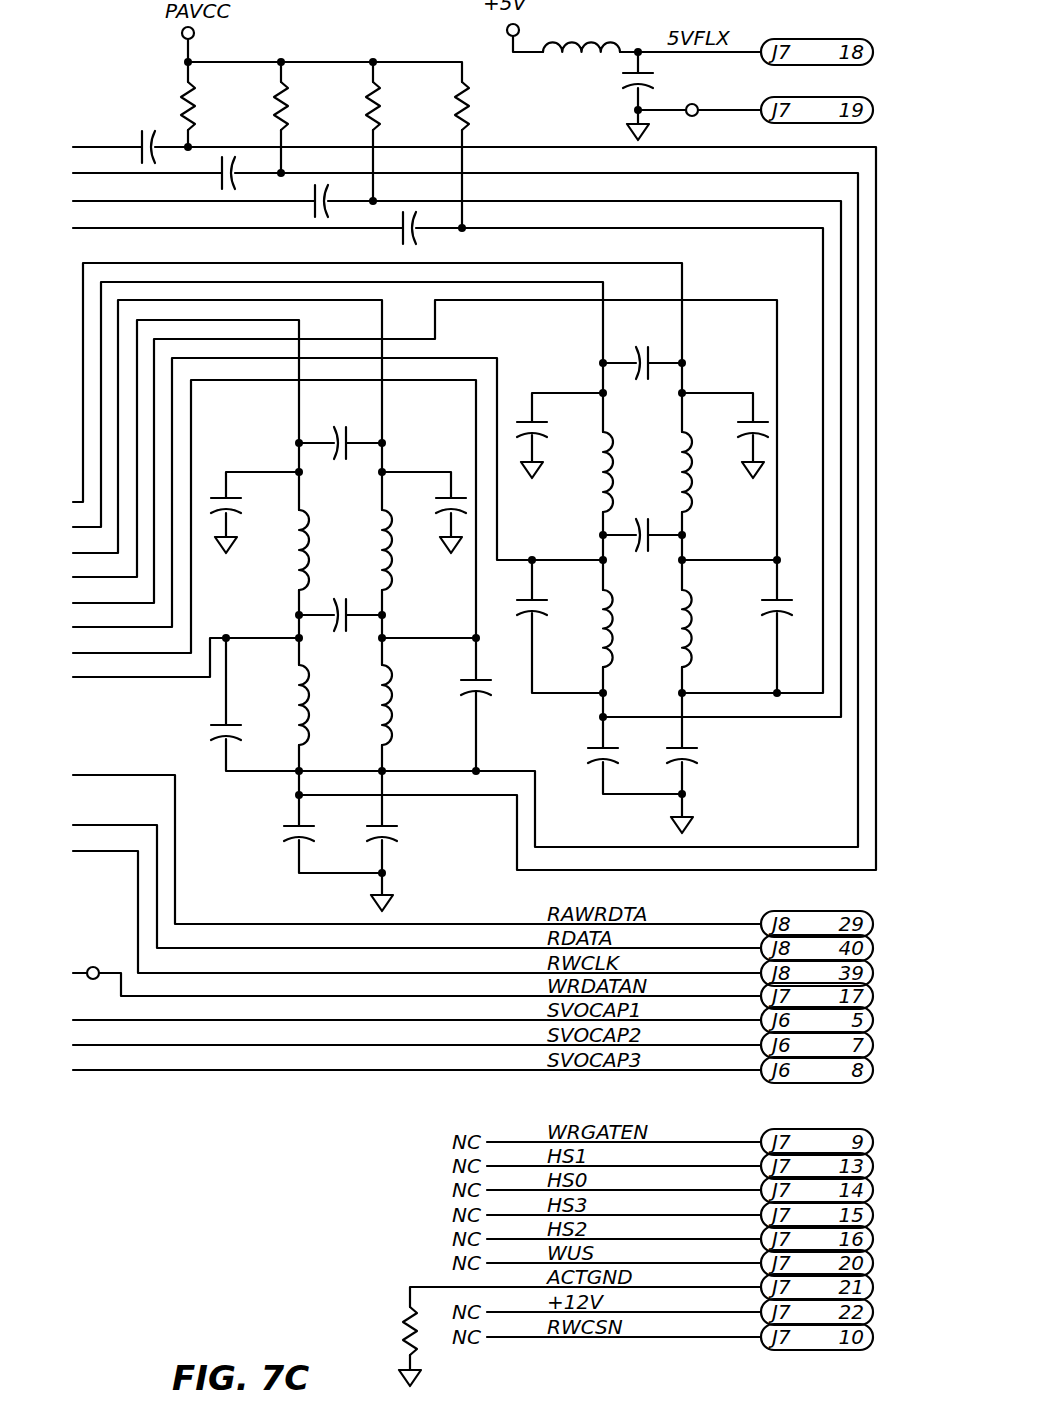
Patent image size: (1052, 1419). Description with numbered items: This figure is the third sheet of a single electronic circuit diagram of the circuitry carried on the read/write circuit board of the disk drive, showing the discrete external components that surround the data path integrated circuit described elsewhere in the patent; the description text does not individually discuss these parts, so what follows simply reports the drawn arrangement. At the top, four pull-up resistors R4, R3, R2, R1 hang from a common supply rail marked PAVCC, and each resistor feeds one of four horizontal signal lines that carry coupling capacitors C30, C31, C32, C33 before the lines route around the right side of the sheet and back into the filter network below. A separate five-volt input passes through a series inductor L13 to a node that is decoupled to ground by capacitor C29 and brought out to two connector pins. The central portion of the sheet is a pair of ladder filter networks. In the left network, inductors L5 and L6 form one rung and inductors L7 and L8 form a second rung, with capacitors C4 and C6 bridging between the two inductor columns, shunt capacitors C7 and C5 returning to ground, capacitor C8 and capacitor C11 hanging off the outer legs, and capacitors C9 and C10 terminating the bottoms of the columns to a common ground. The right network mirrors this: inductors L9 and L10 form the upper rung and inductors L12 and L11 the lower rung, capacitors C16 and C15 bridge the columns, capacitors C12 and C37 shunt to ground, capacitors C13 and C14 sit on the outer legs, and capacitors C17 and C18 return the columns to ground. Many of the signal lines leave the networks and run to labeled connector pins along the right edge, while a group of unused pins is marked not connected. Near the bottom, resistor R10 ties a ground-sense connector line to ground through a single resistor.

The resistor R1 is at (481, 106).
The resistor R2 is at (392, 106).
The resistor R3 is at (301, 106).
The resistor R4 is at (208, 106).
The resistor R10 is at (387, 1331).
The capacitor C4 is at (338, 428).
The capacitor C5 is at (433, 500).
The capacitor C6 is at (341, 601).
The capacitor C7 is at (243, 500).
The capacitor C8 is at (243, 729).
The capacitor C9 is at (315, 828).
The capacitor C10 is at (403, 828).
The capacitor C11 is at (452, 682).
The capacitor C12 is at (554, 425).
The capacitor C13 is at (554, 602).
The capacitor C14 is at (754, 602).
The capacitor C15 is at (650, 522).
The capacitor C16 is at (647, 349).
The capacitor C17 is at (578, 750).
The capacitor C18 is at (705, 750).
The capacitor C29 is at (611, 86).
The capacitor C30 is at (115, 151).
The capacitor C31 is at (203, 178).
The capacitor C32 is at (297, 206).
The capacitor C33 is at (384, 233).
The capacitor C37 is at (731, 425).
The inductor L5 is at (321, 550).
The inductor L6 is at (404, 550).
The inductor L7 is at (321, 705).
The inductor L8 is at (404, 705).
The inductor L9 is at (626, 472).
The inductor L10 is at (709, 472).
The inductor L11 is at (712, 628).
The inductor L12 is at (633, 628).
The inductor L13 is at (581, 31).